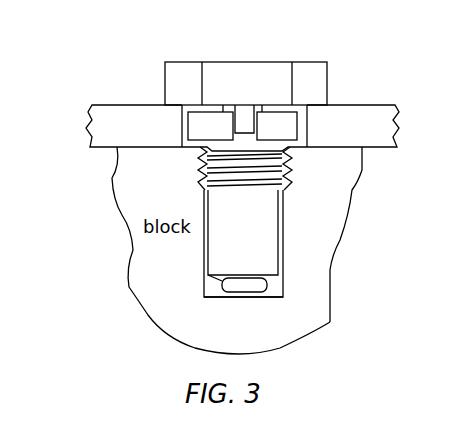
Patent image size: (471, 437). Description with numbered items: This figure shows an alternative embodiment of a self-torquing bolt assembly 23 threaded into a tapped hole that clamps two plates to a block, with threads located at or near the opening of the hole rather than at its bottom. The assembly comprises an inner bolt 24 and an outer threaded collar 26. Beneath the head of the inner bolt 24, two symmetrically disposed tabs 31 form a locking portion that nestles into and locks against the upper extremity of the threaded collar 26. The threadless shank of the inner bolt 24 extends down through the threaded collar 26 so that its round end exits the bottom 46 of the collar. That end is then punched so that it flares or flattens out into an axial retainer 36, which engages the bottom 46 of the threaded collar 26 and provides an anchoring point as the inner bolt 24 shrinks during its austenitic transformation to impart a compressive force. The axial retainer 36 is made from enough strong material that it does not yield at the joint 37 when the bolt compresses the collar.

The self-torquing bolt assembly 23 is at (162, 30).
The inner bolt 24 is at (270, 58).
The tabs 31 is at (242, 122).
The threaded collar 26 is at (262, 222).
The bottom of the threaded collar 46 is at (280, 280).
The axial retainer 36 is at (283, 297).
The joint 37 is at (222, 281).